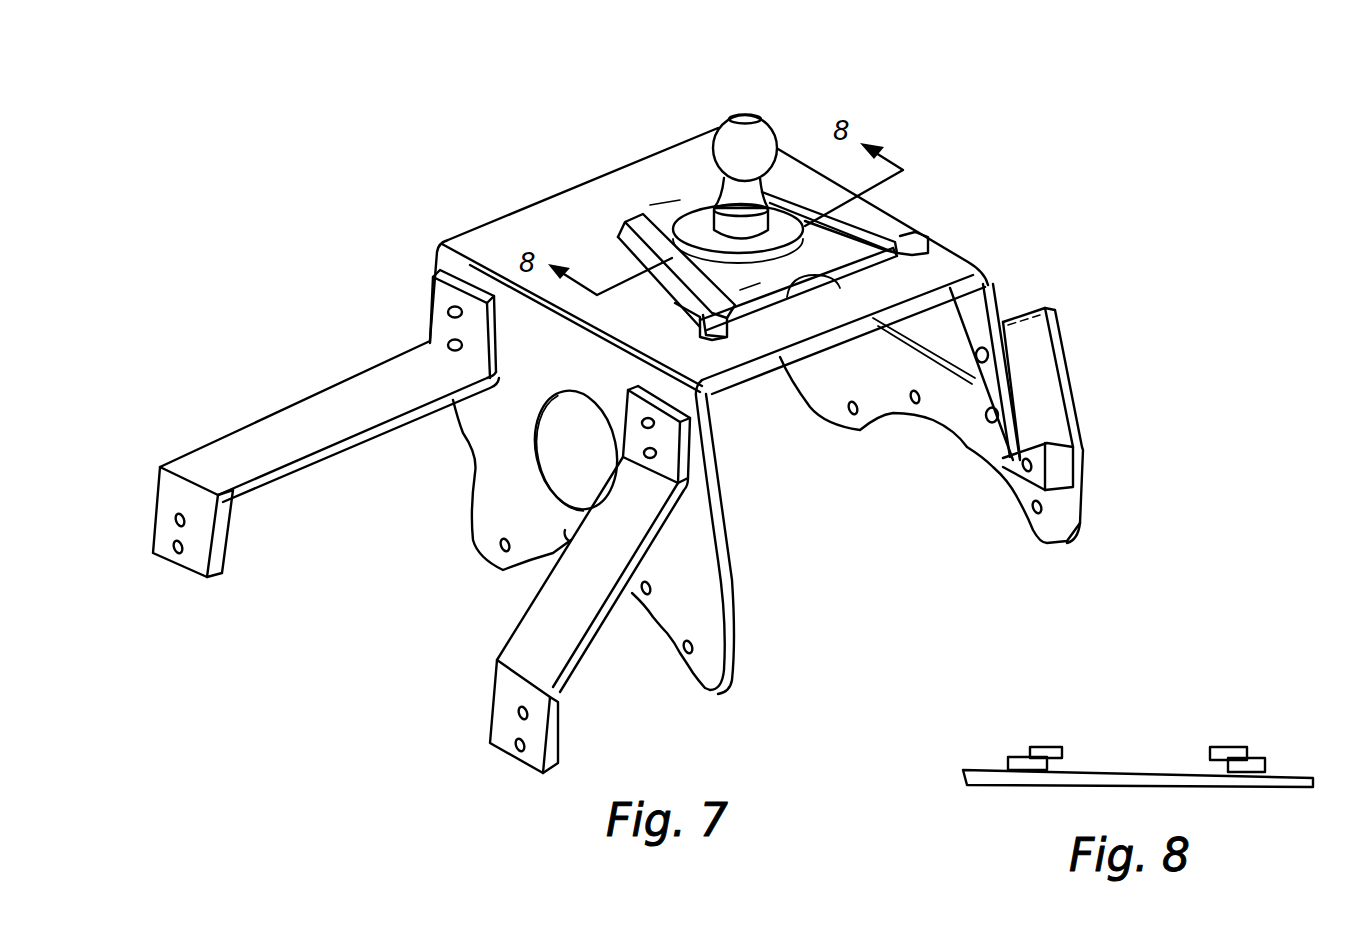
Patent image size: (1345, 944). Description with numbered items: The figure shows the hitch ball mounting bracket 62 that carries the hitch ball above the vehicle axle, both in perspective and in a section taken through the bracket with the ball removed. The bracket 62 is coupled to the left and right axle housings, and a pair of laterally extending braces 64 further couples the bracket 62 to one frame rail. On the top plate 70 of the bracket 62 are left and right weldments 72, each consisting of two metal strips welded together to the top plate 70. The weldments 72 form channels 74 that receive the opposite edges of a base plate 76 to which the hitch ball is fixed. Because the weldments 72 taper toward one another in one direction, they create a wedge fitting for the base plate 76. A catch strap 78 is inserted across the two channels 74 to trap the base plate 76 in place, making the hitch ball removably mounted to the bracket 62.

In FIG. 7, the mounting bracket 62 is at (506, 202).
In FIG. 7, the braces 64 is at (270, 420).
In FIG. 7, the top plate 70 is at (620, 183).
In FIG. 7, the weldments 72 is at (680, 270).
In FIG. 8, the weldments 72 is at (1047, 745).
In FIG. 8, the channels 74 is at (1182, 765).
In FIG. 7, the base plate 76 is at (825, 243).
In FIG. 7, the catch strap 78 is at (752, 290).